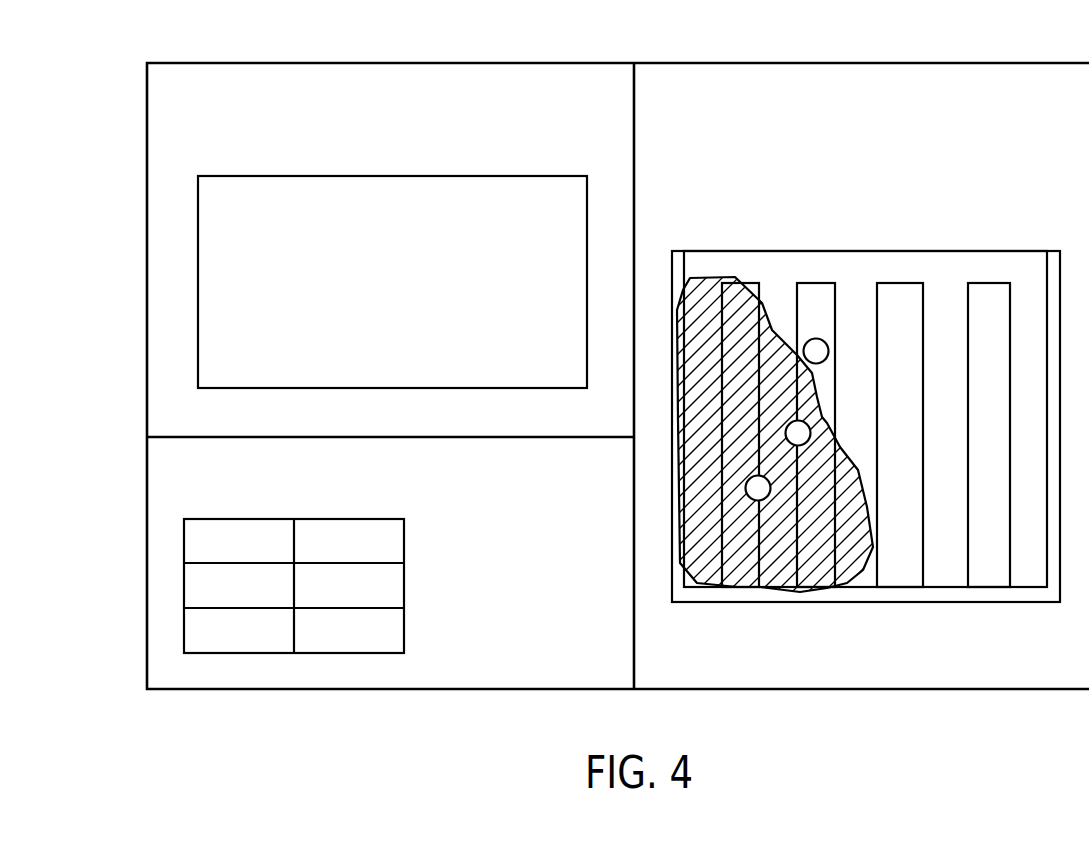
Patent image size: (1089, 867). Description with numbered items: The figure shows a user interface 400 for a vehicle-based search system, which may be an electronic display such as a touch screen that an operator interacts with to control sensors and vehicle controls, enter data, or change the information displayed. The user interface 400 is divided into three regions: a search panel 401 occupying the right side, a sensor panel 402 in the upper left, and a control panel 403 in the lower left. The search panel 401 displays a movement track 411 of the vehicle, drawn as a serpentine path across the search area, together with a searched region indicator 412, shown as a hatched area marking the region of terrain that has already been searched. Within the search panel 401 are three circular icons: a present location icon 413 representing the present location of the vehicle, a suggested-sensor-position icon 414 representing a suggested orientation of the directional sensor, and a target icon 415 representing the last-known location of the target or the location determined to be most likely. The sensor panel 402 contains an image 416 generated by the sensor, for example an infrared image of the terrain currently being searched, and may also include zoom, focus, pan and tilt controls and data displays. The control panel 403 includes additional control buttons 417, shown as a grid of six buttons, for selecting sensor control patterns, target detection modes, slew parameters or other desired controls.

The user interface 400 is at (612, 62).
The search panel 401 is at (723, 83).
The sensor panel 402 is at (282, 83).
The control panel 403 is at (160, 535).
The movement track 411 is at (1029, 588).
The searched region indicator 412 is at (817, 593).
The present location icon 413 is at (810, 431).
The suggested-sensor-position icon 414 is at (814, 338).
The target icon 415 is at (757, 500).
The image 416 is at (198, 292).
The control buttons 417 is at (257, 653).